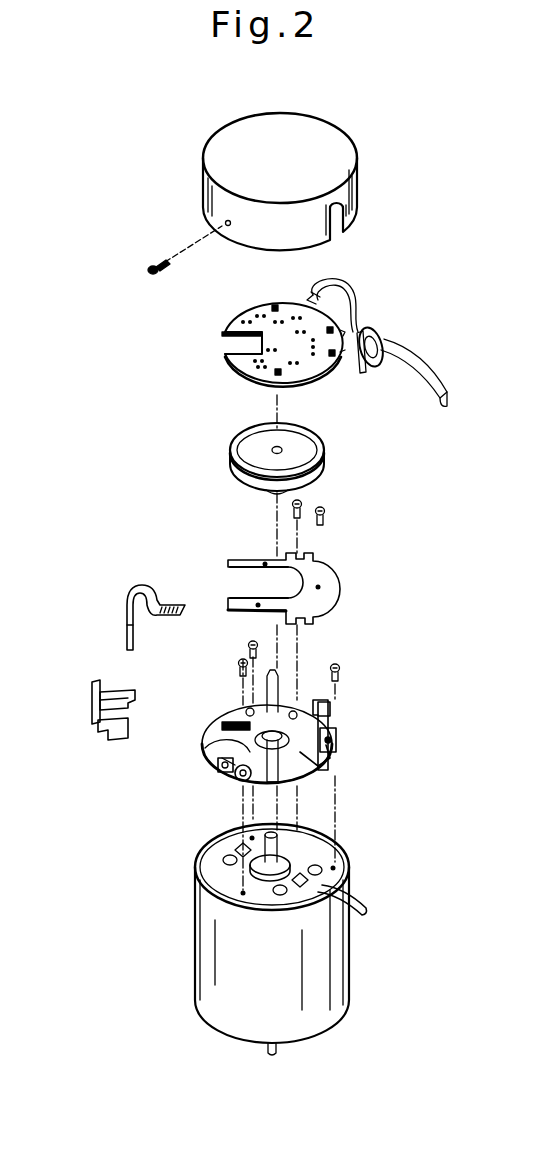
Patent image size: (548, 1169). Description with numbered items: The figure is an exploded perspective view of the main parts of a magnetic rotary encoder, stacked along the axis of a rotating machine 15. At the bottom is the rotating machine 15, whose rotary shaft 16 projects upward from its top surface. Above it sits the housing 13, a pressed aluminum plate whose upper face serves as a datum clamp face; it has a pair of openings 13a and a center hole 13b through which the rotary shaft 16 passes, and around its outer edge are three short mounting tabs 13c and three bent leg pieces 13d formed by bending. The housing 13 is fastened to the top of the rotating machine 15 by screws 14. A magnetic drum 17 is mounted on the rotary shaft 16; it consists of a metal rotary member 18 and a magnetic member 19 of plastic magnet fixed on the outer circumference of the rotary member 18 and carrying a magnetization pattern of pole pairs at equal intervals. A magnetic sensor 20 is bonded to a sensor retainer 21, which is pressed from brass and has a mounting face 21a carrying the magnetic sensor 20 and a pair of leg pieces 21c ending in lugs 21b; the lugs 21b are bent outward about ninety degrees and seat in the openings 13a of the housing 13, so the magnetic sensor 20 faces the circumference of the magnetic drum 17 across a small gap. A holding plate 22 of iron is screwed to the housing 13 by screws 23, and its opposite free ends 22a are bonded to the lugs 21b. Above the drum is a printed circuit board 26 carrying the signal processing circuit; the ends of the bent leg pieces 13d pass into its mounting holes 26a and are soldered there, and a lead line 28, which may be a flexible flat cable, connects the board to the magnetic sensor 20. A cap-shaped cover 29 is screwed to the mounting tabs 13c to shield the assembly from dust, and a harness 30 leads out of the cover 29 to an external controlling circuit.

The cover 29 is at (330, 143).
The printed circuit board 26 is at (273, 339).
The mounting holes 26a is at (274, 306).
The harness 30 is at (432, 373).
The magnetic drum 17 is at (318, 458).
The rotary member 18 is at (306, 452).
The magnetic member 19 is at (318, 471).
The screws 23 is at (301, 501).
The holding plate 22 is at (276, 576).
The free ends 22a is at (232, 603).
The lead line 28 is at (141, 585).
The magnetic sensor 20 is at (126, 638).
The sensor retainer 21 is at (110, 717).
The mounting face 21a is at (92, 705).
The lugs 21b is at (112, 740).
The leg pieces 21c is at (137, 700).
The housing 13 is at (280, 724).
The openings 13a is at (228, 732).
The center hole 13b is at (313, 766).
The mounting tabs 13c is at (322, 706).
The bent leg pieces 13d is at (283, 688).
The screws 14 is at (248, 645).
The rotary shaft 16 is at (300, 847).
The rotating machine 15 is at (294, 939).